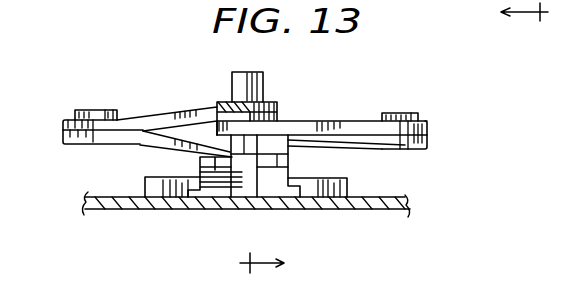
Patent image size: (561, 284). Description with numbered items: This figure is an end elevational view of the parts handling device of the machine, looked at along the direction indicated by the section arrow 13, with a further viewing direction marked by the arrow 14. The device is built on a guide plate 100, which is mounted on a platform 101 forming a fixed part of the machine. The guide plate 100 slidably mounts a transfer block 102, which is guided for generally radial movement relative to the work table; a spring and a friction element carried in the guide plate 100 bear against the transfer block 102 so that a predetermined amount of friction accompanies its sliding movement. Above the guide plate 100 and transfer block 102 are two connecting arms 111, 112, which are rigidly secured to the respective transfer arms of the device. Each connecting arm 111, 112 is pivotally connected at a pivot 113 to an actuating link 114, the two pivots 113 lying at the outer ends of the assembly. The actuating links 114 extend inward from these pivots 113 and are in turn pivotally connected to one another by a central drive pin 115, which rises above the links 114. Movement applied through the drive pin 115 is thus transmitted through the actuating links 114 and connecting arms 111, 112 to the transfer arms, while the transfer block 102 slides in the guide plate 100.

The guide plate 100 is at (333, 188).
The platform 101 is at (393, 214).
The transfer block 102 is at (232, 183).
The connecting arm 111 is at (333, 146).
The connecting arm 112 is at (150, 144).
The pivotal connection 113 is at (94, 110).
The actuating link 114 is at (163, 119).
The drive pin 115 is at (249, 84).
The section line 13 is at (510, 15).
The section line 14 is at (274, 263).